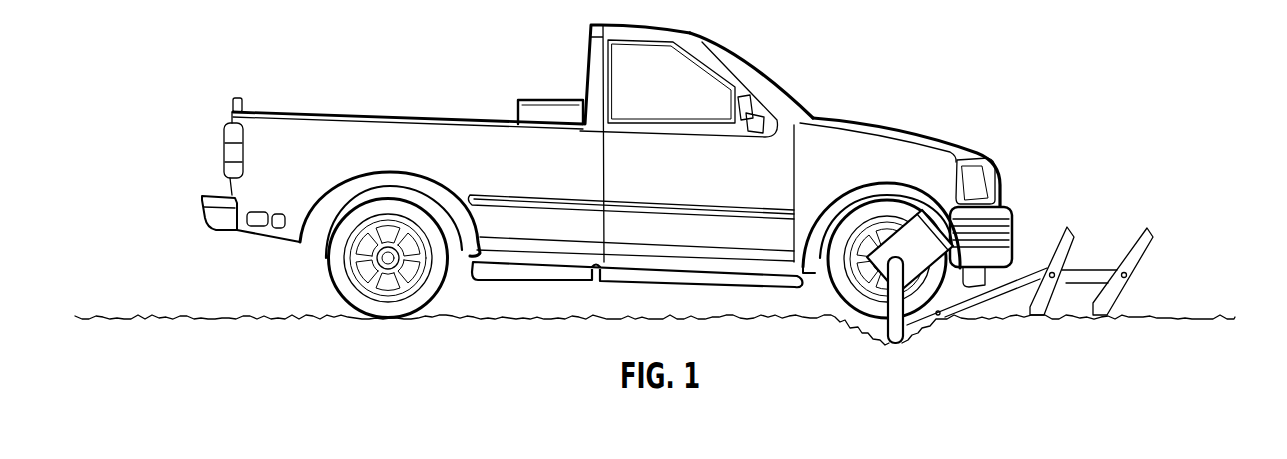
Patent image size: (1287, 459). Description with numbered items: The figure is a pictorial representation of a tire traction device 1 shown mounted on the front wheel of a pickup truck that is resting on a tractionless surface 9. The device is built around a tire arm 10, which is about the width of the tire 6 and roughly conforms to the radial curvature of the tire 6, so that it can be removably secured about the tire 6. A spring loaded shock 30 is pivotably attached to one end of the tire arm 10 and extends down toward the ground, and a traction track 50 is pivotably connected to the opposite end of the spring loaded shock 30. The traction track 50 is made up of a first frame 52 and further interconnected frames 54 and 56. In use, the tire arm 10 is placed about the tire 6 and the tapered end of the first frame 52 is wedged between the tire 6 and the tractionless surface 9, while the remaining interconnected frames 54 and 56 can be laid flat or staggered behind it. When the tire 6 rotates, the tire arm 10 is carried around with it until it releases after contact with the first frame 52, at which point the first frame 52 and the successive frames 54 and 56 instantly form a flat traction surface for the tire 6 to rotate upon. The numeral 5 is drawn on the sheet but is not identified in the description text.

The tire traction device 1 is at (1078, 247).
The vehicle 5 is at (765, 87).
The tire 6 is at (866, 228).
The tractionless surface 9 is at (865, 337).
The tire arm 10 is at (948, 240).
The spring loaded shock 30 is at (887, 316).
The traction track 50 is at (1088, 270).
The first frame 52 is at (982, 290).
The frame 54 is at (1070, 228).
The frame 56 is at (1147, 231).